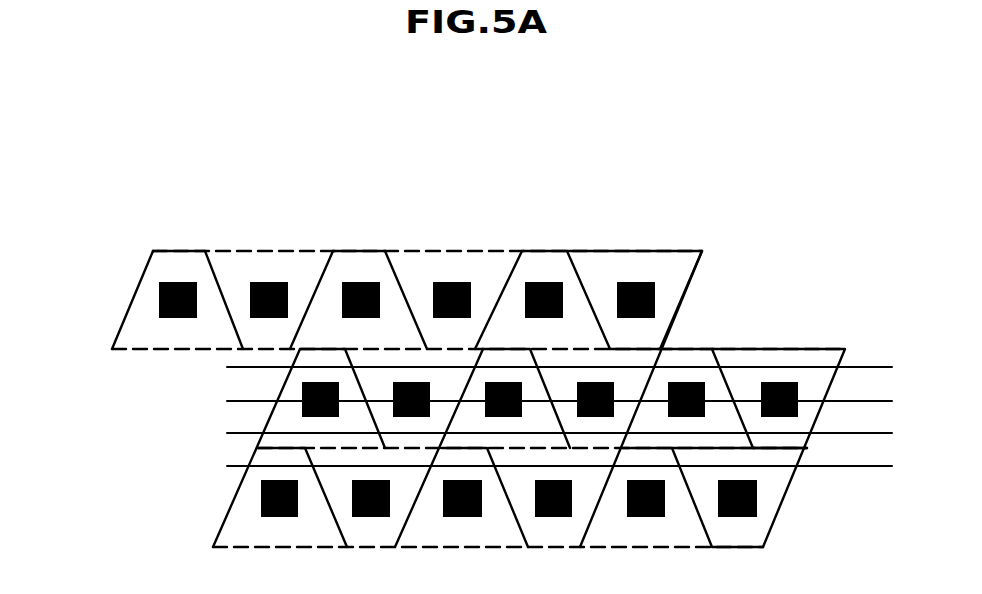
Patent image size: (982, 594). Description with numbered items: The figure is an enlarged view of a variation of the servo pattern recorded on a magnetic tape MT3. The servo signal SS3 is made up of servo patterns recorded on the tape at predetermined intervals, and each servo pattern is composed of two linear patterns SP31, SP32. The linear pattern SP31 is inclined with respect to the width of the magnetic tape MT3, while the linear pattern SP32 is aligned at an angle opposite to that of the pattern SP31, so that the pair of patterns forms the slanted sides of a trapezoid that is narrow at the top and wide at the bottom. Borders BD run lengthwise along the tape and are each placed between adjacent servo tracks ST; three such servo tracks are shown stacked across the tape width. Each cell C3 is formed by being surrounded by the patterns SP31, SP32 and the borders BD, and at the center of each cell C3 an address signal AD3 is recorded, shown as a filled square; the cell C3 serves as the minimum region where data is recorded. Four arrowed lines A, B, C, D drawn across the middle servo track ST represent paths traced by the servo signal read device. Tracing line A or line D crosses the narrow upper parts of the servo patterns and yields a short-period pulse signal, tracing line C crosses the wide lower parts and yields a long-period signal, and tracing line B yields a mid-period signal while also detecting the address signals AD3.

The magnetic tape MT3 is at (658, 177).
The border BD is at (654, 251).
The servo track ST is at (117, 310).
The servo signal SS3 is at (280, 192).
The linear pattern SP31 is at (149, 268).
The linear pattern SP32 is at (218, 280).
The cell C3 is at (303, 260).
The address signal AD3 is at (463, 280).
The line A is at (865, 360).
The line B is at (865, 394).
The line C is at (865, 426).
The line D is at (865, 459).